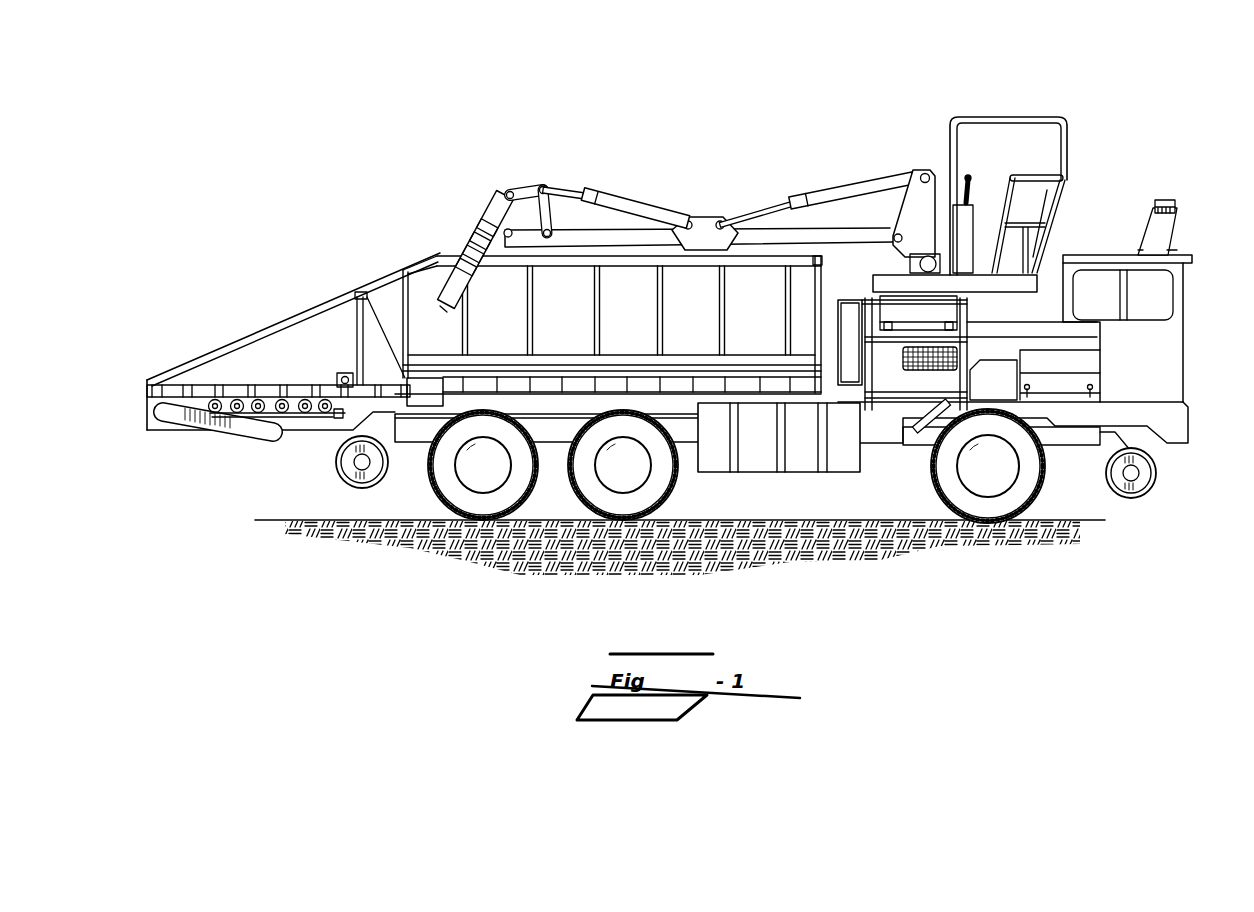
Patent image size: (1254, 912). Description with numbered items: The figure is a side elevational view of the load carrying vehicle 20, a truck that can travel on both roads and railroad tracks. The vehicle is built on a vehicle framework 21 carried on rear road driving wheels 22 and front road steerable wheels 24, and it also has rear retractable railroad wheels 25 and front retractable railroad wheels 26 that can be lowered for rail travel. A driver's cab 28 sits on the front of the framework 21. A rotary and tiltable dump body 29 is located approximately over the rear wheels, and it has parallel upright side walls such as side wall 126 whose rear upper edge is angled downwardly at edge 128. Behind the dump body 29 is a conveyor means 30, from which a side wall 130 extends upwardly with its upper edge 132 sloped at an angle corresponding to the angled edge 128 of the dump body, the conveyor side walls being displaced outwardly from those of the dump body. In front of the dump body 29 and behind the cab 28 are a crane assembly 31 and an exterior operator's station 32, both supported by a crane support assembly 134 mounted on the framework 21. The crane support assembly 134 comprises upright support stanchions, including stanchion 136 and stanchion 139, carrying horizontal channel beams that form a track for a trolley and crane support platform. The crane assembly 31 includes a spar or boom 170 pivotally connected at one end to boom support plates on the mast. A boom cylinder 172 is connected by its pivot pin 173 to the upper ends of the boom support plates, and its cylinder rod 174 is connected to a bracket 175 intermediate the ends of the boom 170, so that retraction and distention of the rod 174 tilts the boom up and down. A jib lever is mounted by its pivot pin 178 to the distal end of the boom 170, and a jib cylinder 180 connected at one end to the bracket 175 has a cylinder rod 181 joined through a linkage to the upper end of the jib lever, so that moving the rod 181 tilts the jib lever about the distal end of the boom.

The load carrying vehicle 20 is at (1135, 197).
The vehicle framework 21 is at (903, 458).
The rear road driving wheels 22 is at (603, 503).
The front road steerable wheels 24 is at (990, 513).
The rear retractable railroad wheels 25 is at (340, 477).
The front retractable railroad wheels 26 is at (1157, 475).
The driver's cab 28 is at (1167, 297).
The rotary and tiltable dump body 29 is at (765, 281).
The conveyor means 30 is at (185, 342).
The crane assembly 31 is at (909, 152).
The exterior operator's station 32 is at (1081, 140).
The side wall 126 is at (623, 260).
The angled rear upper edge 128 is at (415, 265).
The side wall 130 is at (287, 347).
The upper edge 132 is at (220, 347).
The crane support assembly 134 is at (852, 287).
The upright support stanchion 136 is at (858, 404).
The upright support stanchion 139 is at (963, 377).
The boom 170 is at (807, 238).
The boom cylinder 172 is at (842, 193).
The pivot pin 173 is at (928, 175).
The cylinder rod 174 is at (752, 210).
The bracket 175 is at (708, 225).
The pivot pin 178 is at (508, 240).
The jib cylinder 180 is at (653, 207).
The cylinder rod 181 is at (568, 188).